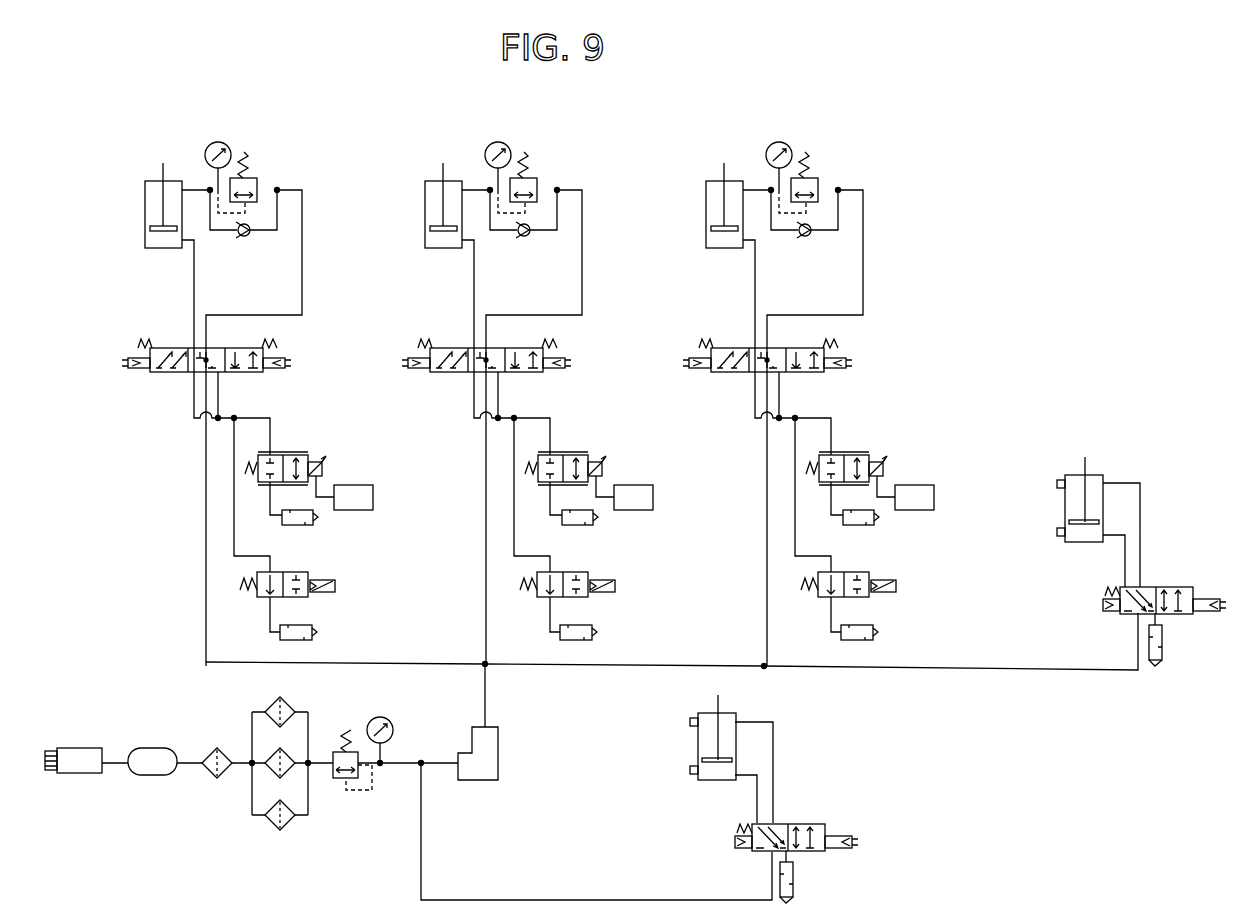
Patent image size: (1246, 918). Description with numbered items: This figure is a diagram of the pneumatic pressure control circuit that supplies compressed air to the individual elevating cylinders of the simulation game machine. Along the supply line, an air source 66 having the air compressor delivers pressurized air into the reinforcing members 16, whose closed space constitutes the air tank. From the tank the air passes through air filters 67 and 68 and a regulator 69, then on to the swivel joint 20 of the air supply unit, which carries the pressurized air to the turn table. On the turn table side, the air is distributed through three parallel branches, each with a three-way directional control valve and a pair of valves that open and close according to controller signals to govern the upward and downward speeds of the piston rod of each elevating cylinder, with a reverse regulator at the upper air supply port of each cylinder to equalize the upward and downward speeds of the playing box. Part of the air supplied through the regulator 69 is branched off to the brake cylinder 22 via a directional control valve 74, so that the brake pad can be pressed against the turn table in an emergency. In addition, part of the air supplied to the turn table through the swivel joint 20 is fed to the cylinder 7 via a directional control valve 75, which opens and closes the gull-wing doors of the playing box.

The cylinder 7 is at (1065, 505).
The square pipe 16 is at (143, 748).
The swivel joint 20 is at (498, 745).
The brake cylinder 22 is at (698, 735).
The air source 66 is at (70, 748).
The air filter 67 is at (208, 752).
The air filter 68 is at (295, 810).
The regulator 69 is at (340, 780).
The directional control valve 74 is at (820, 824).
The directional control valve 75 is at (1175, 587).